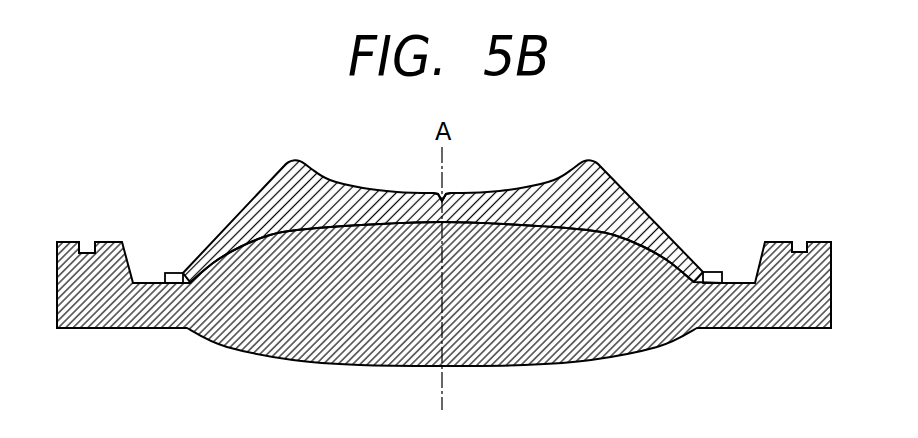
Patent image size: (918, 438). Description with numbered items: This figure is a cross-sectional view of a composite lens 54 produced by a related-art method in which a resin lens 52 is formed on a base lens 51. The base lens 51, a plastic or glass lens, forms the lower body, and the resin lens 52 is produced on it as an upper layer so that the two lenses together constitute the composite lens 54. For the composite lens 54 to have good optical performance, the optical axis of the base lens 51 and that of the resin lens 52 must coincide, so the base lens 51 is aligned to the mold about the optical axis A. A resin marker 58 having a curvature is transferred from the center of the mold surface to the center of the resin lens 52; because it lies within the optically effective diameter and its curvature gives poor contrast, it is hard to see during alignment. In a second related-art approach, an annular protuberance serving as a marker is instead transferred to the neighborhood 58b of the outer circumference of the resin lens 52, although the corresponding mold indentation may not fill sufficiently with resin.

The base lens 51 is at (775, 242).
The resin lens 52 is at (603, 210).
The composite lens 54 is at (832, 192).
The resin marker 58 is at (449, 191).
The neighborhood of the outer circumference of the resin lens 58b is at (166, 272).